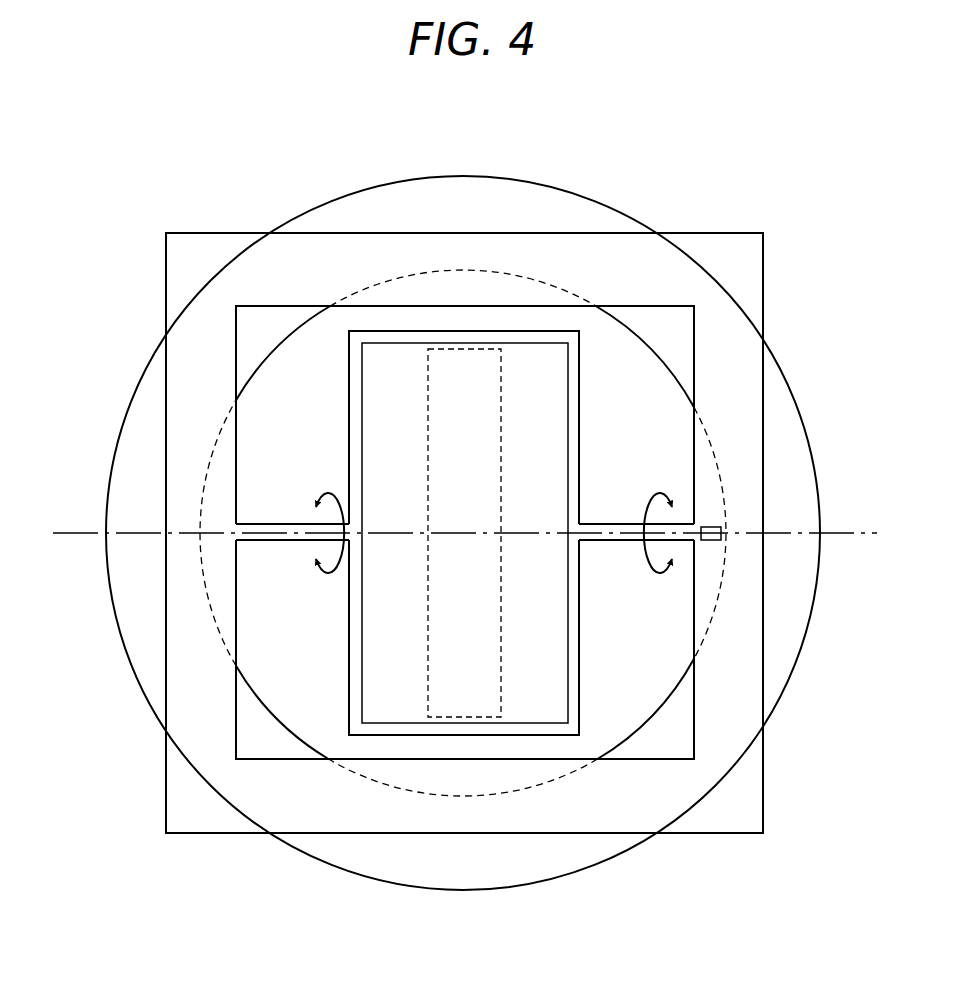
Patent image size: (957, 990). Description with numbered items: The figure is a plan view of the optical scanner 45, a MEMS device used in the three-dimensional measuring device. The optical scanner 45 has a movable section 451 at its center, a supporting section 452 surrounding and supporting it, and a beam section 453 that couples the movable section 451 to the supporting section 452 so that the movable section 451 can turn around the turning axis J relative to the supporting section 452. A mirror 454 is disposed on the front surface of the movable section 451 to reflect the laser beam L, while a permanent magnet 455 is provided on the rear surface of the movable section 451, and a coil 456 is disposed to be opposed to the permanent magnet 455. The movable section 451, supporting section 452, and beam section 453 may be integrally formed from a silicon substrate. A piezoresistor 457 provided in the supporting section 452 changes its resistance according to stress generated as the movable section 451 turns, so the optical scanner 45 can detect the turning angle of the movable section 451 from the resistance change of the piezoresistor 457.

The optical scanner 45 is at (721, 160).
The movable section 451 is at (387, 331).
The supporting section 452 is at (635, 798).
The beam section 453 is at (295, 541).
The mirror 454 is at (547, 696).
The permanent magnet 455 is at (503, 410).
The coil 456 is at (127, 470).
The piezoresistor 457 is at (709, 541).